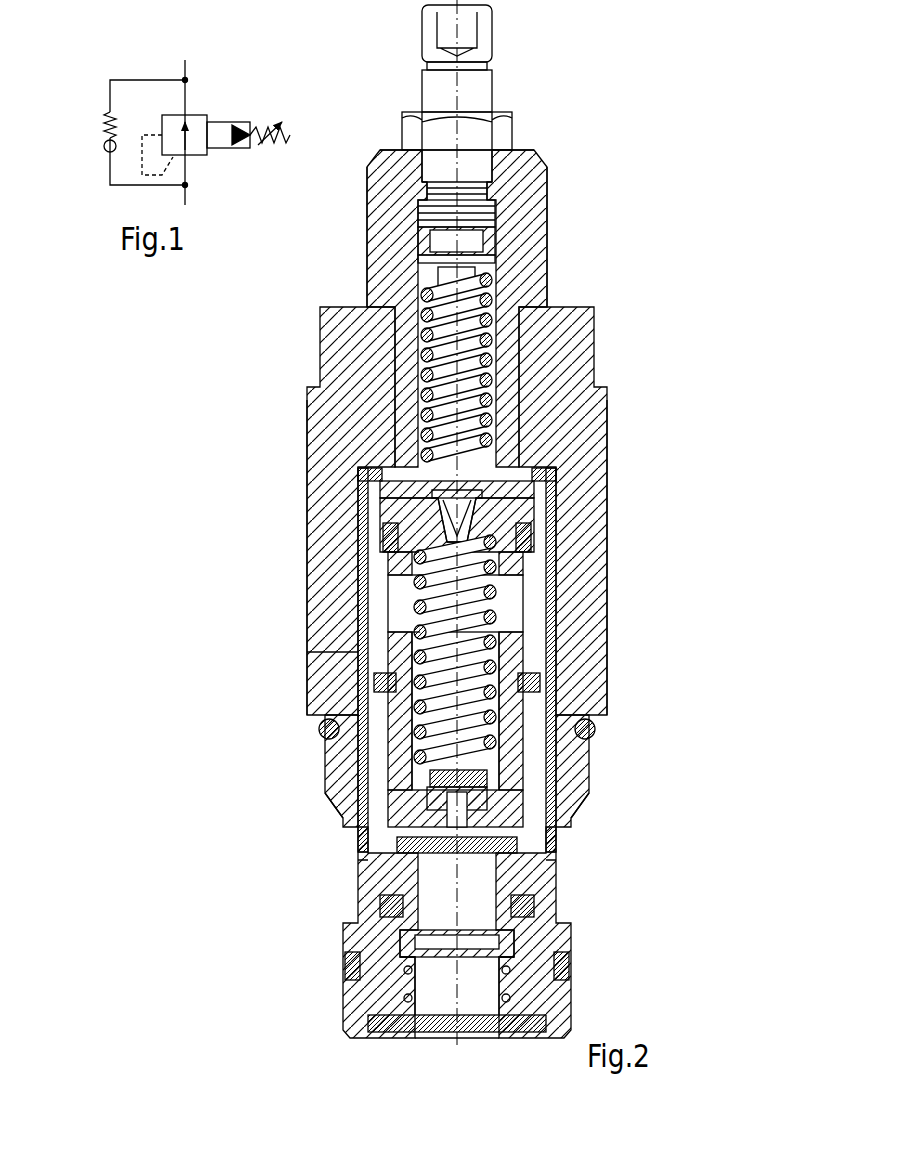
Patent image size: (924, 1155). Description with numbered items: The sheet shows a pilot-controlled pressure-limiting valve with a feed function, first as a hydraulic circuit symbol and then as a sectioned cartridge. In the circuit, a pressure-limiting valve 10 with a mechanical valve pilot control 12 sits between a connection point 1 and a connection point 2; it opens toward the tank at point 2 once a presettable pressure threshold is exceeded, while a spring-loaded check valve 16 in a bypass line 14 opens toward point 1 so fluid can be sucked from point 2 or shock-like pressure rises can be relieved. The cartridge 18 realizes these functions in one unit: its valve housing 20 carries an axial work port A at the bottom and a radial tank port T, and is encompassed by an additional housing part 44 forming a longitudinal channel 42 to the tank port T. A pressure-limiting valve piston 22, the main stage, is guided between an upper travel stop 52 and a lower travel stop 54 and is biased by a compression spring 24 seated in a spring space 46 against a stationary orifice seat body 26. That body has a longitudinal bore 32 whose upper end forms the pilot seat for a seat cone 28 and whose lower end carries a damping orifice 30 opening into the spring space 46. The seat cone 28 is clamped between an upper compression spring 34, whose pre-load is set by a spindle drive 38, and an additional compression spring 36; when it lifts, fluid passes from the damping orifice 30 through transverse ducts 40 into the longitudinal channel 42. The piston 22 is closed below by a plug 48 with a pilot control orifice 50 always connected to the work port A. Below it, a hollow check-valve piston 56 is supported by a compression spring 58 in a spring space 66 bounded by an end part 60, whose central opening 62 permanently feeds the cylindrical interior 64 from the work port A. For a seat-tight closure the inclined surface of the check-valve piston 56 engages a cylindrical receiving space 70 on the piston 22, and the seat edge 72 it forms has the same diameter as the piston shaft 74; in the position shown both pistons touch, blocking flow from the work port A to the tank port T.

In FIG. 1, the pressure-limiting valve 10 is at (193, 127).
In FIG. 1, the mechanical valve pilot control 12 is at (217, 133).
In FIG. 2, the mechanical valve pilot control 12 is at (556, 198).
In FIG. 1, the bypass line 14 is at (135, 80).
In FIG. 1, the spring-loaded check valve 16 is at (105, 152).
In FIG. 1, the connection point 1 is at (179, 68).
In FIG. 1, the connection point 2 is at (178, 198).
In FIG. 2, the cartridge 18 is at (566, 262).
In FIG. 2, the valve housing 20 is at (600, 697).
In FIG. 2, the pressure-limiting valve piston 22 is at (607, 660).
In FIG. 2, the compression spring 24 is at (590, 548).
In FIG. 2, the orifice seat body 26 is at (560, 490).
In FIG. 2, the seat cone 28 is at (545, 455).
In FIG. 2, the damping orifice 30 is at (363, 533).
In FIG. 2, the longitudinal bore 32 is at (480, 512).
In FIG. 2, the upper compression spring 34 is at (548, 290).
In FIG. 2, the additional compression spring 36 is at (560, 405).
In FIG. 2, the spindle drive 38 is at (480, 95).
In FIG. 2, the transverse ducts 40 is at (370, 460).
In FIG. 2, the longitudinal channel 42 is at (545, 615).
In FIG. 2, the additional housing part 44 is at (590, 325).
In FIG. 2, the spring space 46 is at (545, 580).
In FIG. 2, the plug 48 is at (580, 760).
In FIG. 2, the pilot control orifice 50 is at (585, 797).
In FIG. 2, the upper travel stop 52 is at (370, 652).
In FIG. 2, the lower travel stop 54 is at (325, 790).
In FIG. 2, the check-valve piston 56 is at (560, 890).
In FIG. 2, the compression spring 58 is at (560, 928).
In FIG. 2, the end part 60 is at (500, 985).
In FIG. 2, the central opening 62 is at (535, 975).
In FIG. 2, the cylindrical interior 64 is at (357, 888).
In FIG. 2, the spring space 66 is at (347, 960).
In FIG. 2, the cylindrical receiving space 70 is at (570, 827).
In FIG. 2, the seat edge 72 is at (358, 852).
In FIG. 2, the piston shaft 74 is at (338, 707).
In FIG. 2, the work port A is at (455, 1040).
In FIG. 2, the tank port T is at (560, 860).